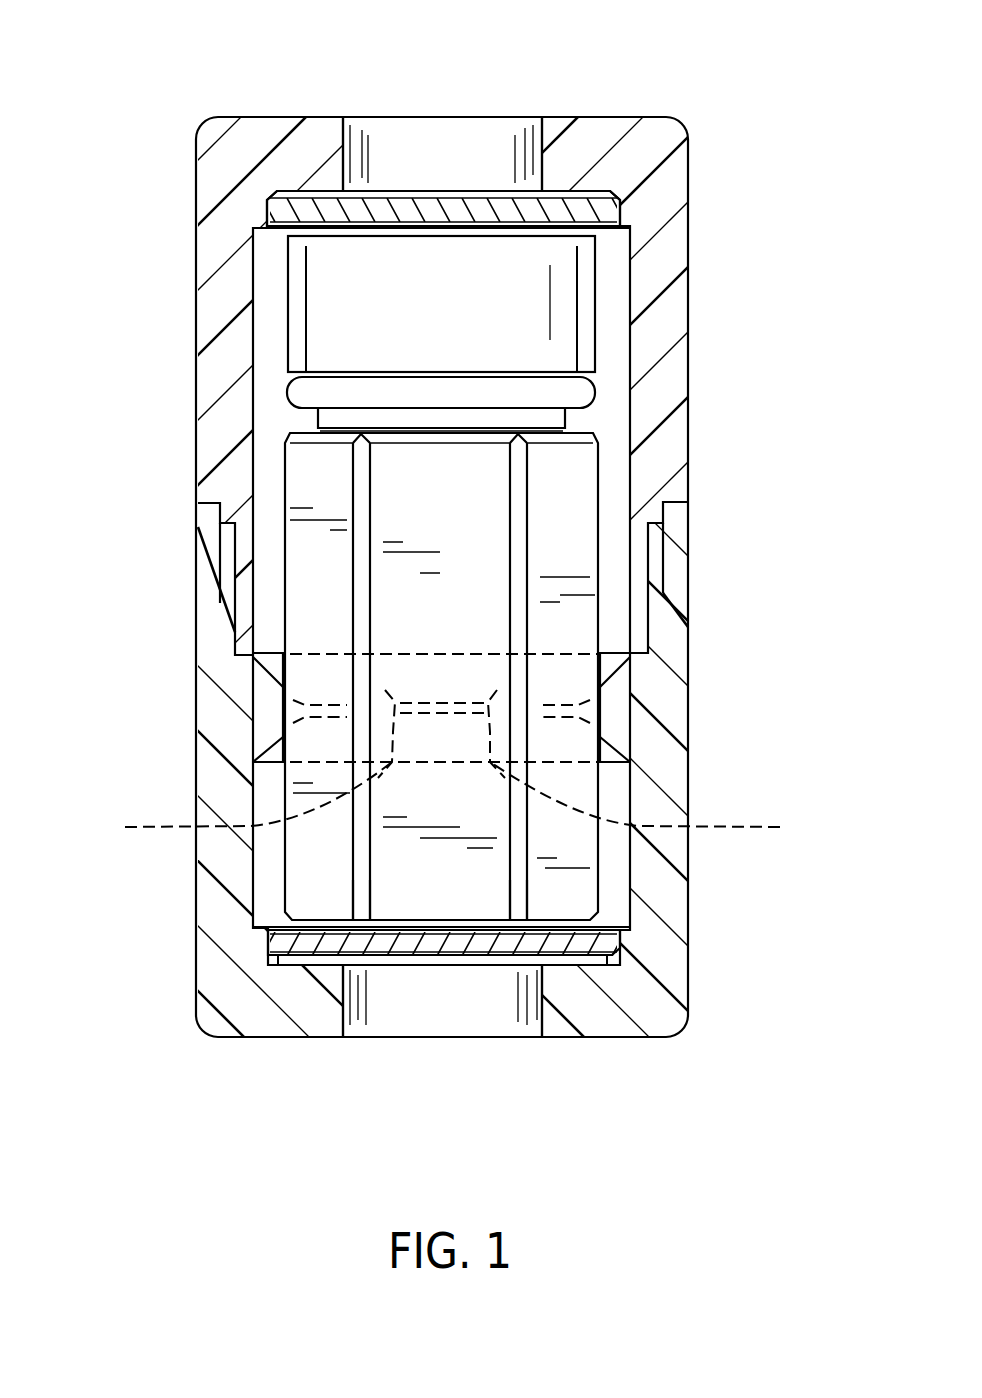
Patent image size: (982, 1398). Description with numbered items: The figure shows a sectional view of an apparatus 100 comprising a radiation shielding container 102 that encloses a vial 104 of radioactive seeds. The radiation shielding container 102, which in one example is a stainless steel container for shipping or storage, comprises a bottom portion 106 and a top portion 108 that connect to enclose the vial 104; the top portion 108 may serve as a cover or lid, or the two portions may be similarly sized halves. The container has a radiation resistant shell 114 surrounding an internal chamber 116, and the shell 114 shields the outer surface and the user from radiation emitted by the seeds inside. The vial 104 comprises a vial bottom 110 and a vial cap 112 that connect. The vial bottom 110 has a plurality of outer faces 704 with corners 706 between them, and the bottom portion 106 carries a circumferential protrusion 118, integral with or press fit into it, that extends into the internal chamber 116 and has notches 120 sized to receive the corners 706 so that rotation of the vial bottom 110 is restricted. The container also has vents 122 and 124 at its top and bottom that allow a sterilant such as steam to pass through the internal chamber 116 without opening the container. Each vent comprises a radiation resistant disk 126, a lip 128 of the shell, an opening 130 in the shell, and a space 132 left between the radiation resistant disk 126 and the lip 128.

The apparatus 100 is at (213, 77).
The radiation shielding container 102 is at (145, 205).
The vial 104 is at (281, 415).
The bottom portion 106 is at (640, 775).
The top portion 108 is at (688, 360).
The vial bottom 110 is at (603, 540).
The vial cap 112 is at (512, 290).
The radiation resistant shell 114 is at (653, 403).
The internal chamber 116 is at (600, 417).
The circumferential protrusion 118 is at (262, 720).
The notches 120 is at (452, 750).
The vent 122 is at (351, 1065).
The vent 124 is at (472, 88).
The radiation resistant disk 126 is at (437, 210).
The lip 128 is at (332, 180).
The opening 130 is at (490, 137).
The space 132 is at (605, 195).
The outer faces 704 is at (318, 610).
The corners 706 is at (365, 893).